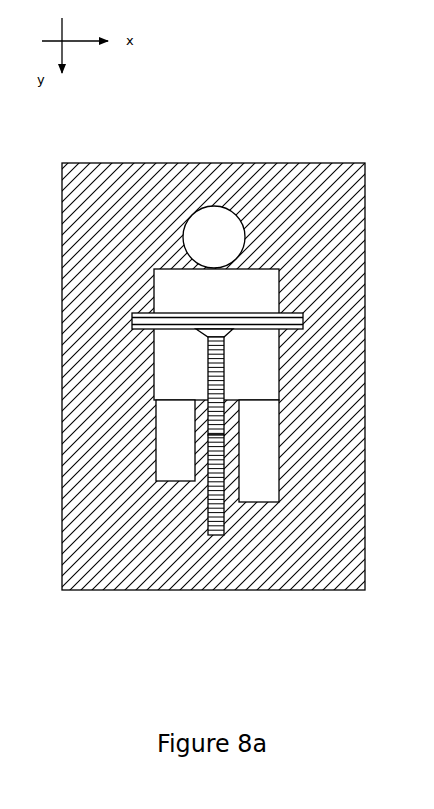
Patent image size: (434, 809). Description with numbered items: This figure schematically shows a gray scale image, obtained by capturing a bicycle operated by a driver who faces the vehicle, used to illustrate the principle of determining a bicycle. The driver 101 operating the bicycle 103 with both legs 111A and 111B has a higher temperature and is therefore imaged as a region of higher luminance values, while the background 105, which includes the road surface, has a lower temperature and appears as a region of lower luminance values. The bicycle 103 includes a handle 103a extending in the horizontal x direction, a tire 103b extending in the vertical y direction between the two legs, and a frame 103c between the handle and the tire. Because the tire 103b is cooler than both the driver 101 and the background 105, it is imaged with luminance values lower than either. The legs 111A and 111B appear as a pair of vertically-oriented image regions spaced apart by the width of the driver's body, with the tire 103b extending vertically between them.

The driver 101 is at (217, 206).
The bicycle 103 is at (248, 451).
The handle 103a is at (282, 313).
The tire 103b is at (216, 487).
The frame 103c is at (215, 381).
The background 105 is at (85, 387).
The leg 111A is at (258, 450).
The leg 111B is at (183, 455).